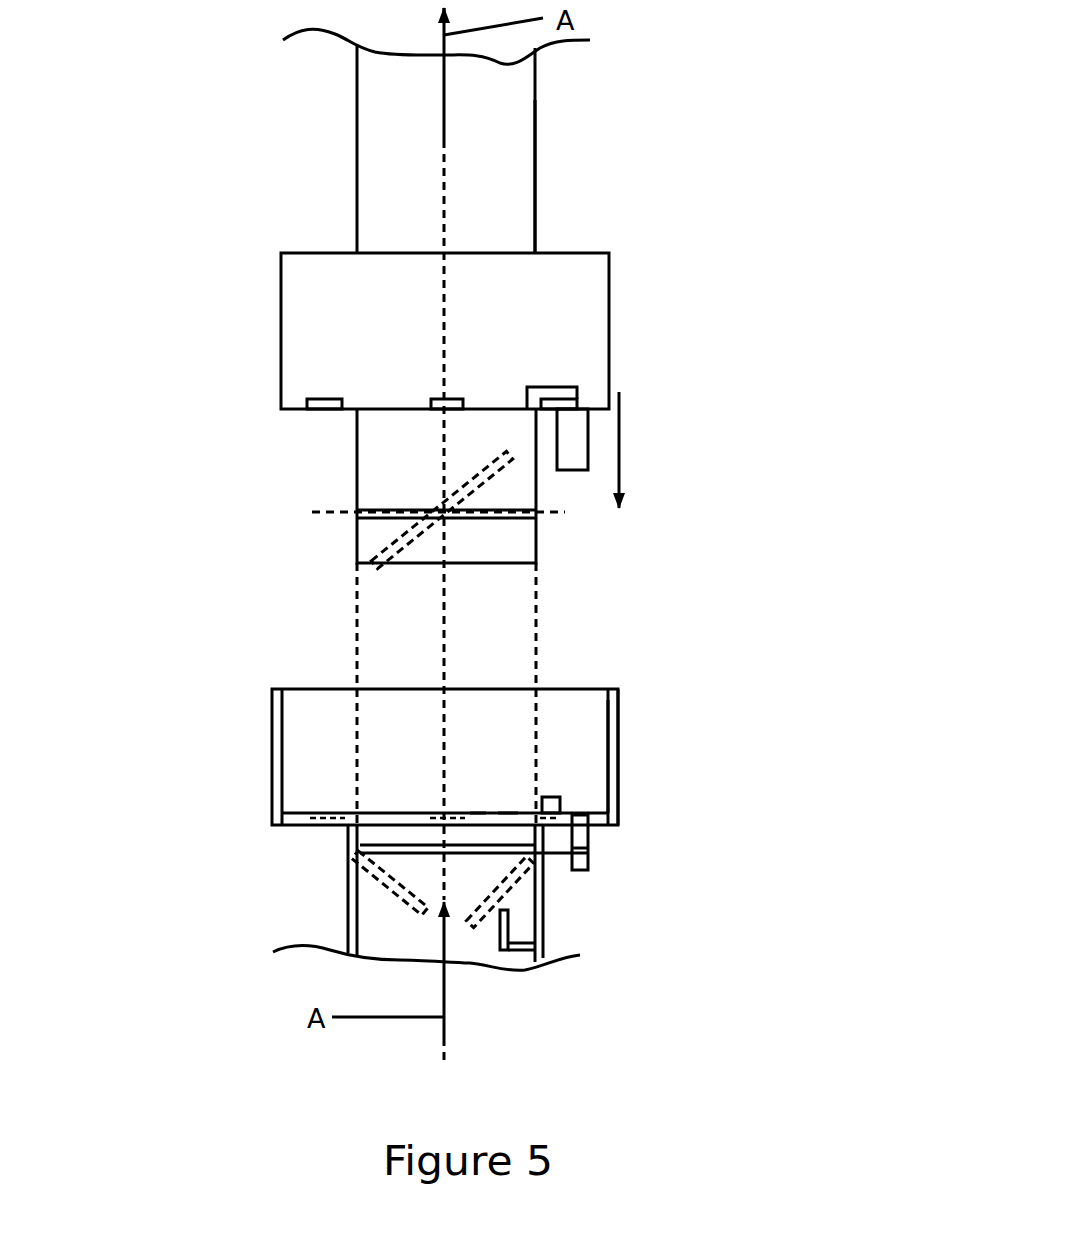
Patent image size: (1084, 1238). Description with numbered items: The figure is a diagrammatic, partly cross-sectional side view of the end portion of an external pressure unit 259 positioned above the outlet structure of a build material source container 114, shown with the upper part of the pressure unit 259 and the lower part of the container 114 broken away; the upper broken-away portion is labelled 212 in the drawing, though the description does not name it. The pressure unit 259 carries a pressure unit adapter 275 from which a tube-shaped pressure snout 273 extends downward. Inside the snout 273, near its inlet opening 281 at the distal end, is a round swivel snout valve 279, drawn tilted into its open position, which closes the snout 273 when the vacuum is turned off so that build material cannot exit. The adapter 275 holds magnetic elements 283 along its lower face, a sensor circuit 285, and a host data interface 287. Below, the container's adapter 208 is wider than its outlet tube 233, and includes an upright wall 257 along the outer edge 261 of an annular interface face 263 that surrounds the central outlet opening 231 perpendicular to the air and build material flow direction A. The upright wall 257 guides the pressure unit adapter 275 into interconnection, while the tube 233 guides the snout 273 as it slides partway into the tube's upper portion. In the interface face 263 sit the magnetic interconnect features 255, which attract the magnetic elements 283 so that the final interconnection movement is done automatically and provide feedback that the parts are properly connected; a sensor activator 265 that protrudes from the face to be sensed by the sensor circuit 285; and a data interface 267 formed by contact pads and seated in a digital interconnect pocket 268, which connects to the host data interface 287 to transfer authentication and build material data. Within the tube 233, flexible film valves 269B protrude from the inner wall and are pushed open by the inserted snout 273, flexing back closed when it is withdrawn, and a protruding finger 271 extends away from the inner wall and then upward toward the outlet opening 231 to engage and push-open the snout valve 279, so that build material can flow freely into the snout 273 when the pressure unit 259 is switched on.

The upper duct section 212 is at (300, 135).
The pressure unit 259 is at (635, 197).
The pressure unit adapter 275 is at (237, 320).
The magnetic elements 283 is at (431, 399).
The sensor circuit 285 is at (563, 393).
The host data interface 287 is at (565, 455).
The pressure snout 273 is at (280, 463).
The snout valve 279 is at (536, 520).
The inlet opening 281 is at (390, 575).
The adapter 208 is at (643, 689).
The outer edge 261 is at (620, 712).
The upright wall 257 is at (610, 736).
The magnetic interconnect feature 255 is at (428, 815).
The interface face 263 is at (477, 813).
The outlet opening 231 is at (508, 820).
The sensor activator 265 is at (560, 803).
The data interface 267 is at (588, 842).
The digital interconnect pocket 268 is at (588, 848).
The film valves 269B is at (362, 852).
The outlet tube 233 is at (543, 900).
The protruding finger 271 is at (508, 928).
The source container 114 is at (247, 1013).